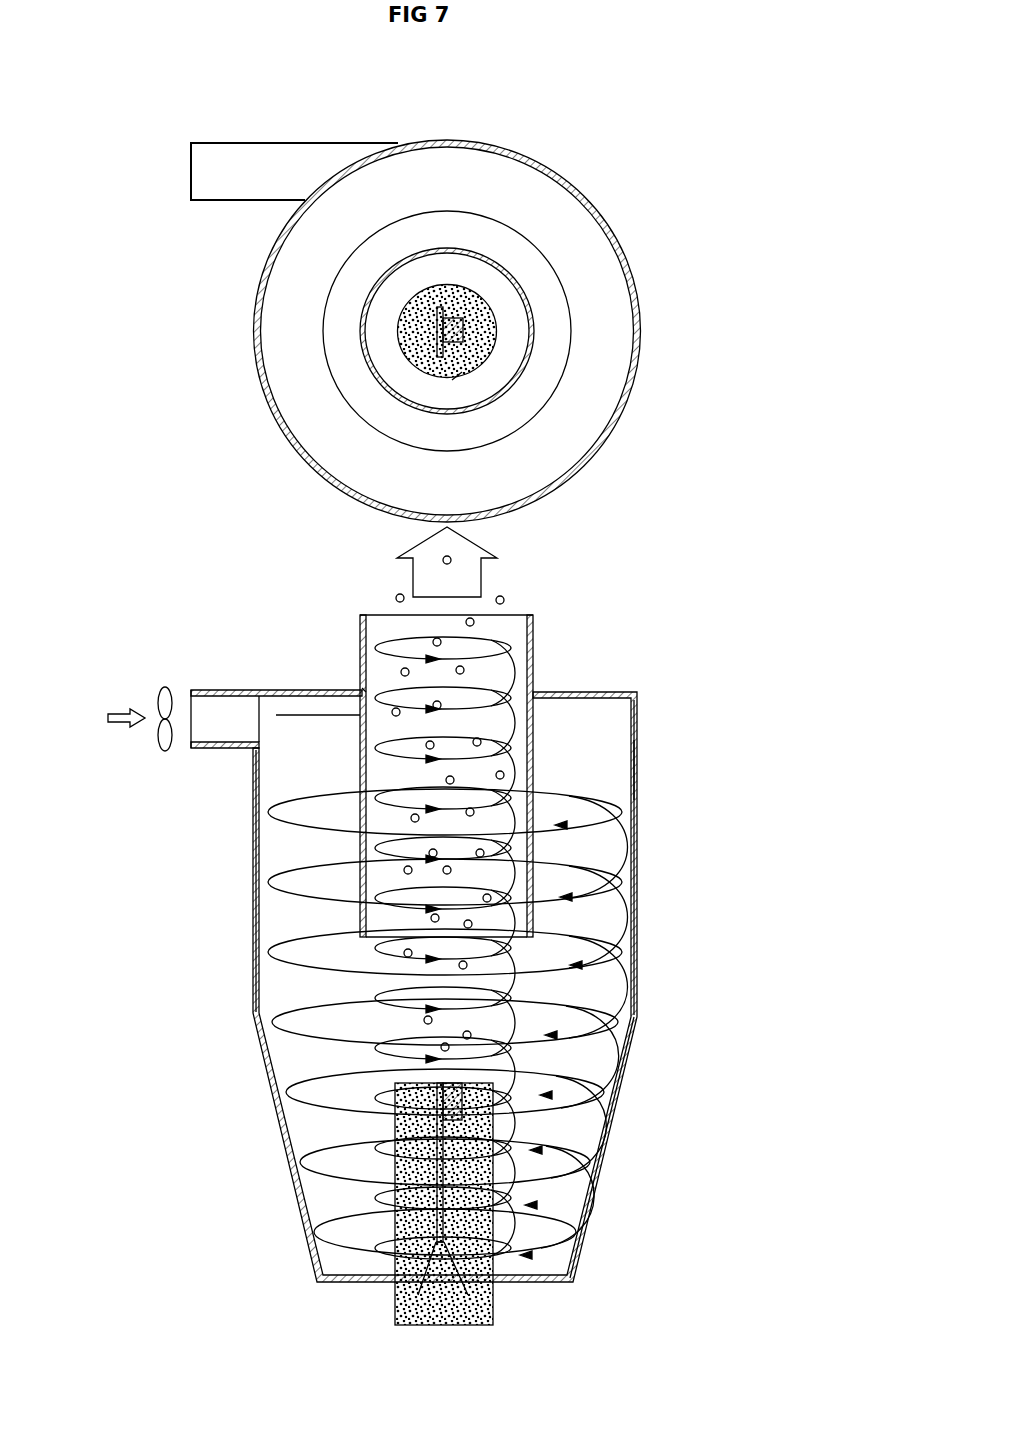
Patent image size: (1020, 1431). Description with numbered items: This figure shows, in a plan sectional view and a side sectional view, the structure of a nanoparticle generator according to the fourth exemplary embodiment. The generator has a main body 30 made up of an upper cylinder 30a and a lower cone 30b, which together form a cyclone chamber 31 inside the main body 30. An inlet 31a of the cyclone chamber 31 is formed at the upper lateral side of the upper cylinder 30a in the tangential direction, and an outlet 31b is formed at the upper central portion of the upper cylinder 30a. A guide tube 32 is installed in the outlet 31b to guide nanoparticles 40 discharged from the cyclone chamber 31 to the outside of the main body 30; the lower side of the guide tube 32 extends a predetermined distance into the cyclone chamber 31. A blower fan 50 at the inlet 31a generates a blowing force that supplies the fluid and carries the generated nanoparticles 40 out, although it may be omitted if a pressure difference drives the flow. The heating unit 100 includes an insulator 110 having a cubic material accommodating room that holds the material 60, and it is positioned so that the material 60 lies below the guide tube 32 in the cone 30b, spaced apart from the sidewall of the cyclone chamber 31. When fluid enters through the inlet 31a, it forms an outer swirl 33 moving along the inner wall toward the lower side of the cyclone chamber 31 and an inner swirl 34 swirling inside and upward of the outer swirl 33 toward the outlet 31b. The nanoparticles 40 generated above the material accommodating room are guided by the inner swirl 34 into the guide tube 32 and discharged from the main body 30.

The main body 30 is at (644, 342).
The upper cylinder 30a is at (637, 966).
The lower cone 30b is at (622, 1082).
The cyclone chamber 31 is at (284, 358).
The inlet 31a is at (191, 174).
The outlet 31b is at (362, 686).
The guide tube 32 is at (502, 262).
The outer swirl 33 is at (634, 776).
The inner swirl 34 is at (290, 893).
The nanoparticles 40 is at (398, 598).
The blower fan 50 is at (166, 752).
The material 60 is at (465, 342).
The heating unit 100 is at (508, 329).
The insulator 110 is at (462, 372).